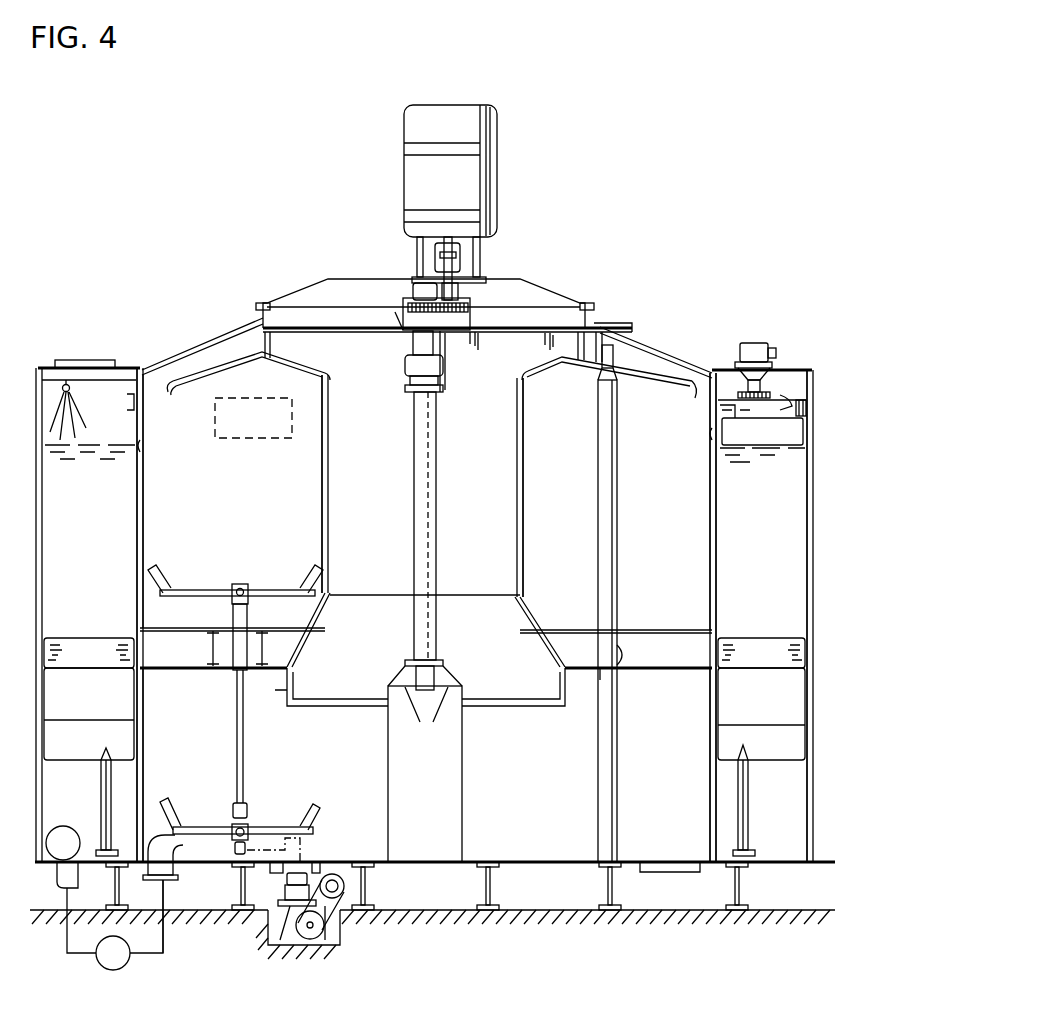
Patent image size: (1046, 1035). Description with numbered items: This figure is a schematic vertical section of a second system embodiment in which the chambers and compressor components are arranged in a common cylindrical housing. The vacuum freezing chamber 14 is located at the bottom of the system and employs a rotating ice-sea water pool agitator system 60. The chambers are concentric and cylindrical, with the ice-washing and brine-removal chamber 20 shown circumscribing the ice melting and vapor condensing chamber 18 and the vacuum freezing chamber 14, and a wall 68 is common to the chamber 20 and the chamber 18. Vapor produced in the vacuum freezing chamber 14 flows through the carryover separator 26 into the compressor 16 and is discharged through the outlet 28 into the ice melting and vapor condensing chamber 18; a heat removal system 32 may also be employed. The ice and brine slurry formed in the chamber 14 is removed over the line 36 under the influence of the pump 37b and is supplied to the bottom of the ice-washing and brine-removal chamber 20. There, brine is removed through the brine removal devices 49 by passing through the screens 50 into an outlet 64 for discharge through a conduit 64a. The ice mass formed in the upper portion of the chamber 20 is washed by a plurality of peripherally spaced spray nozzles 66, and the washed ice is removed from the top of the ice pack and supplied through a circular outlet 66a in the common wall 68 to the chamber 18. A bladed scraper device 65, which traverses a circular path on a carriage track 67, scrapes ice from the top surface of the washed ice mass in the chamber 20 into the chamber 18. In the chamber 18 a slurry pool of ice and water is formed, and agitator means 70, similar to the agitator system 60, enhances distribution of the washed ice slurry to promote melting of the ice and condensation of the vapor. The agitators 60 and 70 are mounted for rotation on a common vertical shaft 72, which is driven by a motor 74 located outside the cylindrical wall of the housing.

The compressor 16 is at (473, 264).
The outlet 28 is at (240, 320).
The spray nozzles 66 is at (69, 385).
The carriage track 67 is at (126, 400).
The heat removal system 32 is at (215, 436).
The circular outlet 66a is at (713, 428).
The wall 68 is at (148, 508).
The ice melting and vapor condensing chamber 18 is at (272, 507).
The agitator means 70 is at (200, 598).
The screens 50 is at (86, 640).
The brine removal devices 49 is at (120, 707).
The common vertical shaft 72 is at (238, 708).
The carryover separator 26 is at (277, 706).
The vacuum freezing chamber 14 is at (314, 788).
The outlet 64 is at (101, 796).
The conduit 64a is at (122, 852).
The rotating ice-sea water pool agitator system 60 is at (166, 815).
The line 36 is at (165, 940).
The pump 37b is at (128, 968).
The motor 74 is at (288, 925).
The bladed scraper device 65 is at (768, 410).
The ice-washing and brine-removal chamber 20 is at (772, 575).